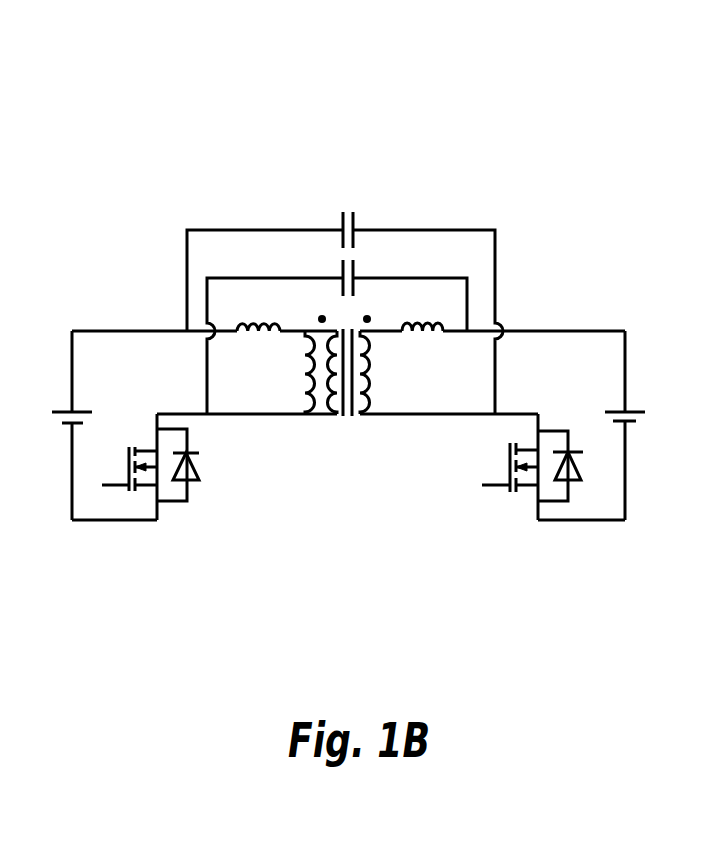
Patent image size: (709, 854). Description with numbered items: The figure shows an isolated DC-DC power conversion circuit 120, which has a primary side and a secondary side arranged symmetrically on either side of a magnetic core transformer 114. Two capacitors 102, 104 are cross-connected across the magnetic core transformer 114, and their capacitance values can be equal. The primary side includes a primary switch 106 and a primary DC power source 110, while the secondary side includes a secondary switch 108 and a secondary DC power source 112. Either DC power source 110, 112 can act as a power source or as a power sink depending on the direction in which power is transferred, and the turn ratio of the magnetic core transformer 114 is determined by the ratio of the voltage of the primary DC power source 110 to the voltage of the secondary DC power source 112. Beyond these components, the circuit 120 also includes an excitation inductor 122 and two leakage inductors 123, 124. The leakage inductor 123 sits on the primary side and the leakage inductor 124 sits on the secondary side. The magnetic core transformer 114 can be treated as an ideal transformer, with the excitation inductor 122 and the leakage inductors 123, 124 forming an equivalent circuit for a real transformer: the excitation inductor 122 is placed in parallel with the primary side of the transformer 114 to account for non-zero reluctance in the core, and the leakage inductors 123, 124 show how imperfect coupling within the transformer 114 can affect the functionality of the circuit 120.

The isolated DC-DC power conversion circuit 120 is at (155, 133).
The capacitor 102 is at (335, 205).
The capacitor 104 is at (363, 265).
The magnetic core transformer 114 is at (345, 427).
The excitation inductor 122 is at (297, 390).
The leakage inductor 123 is at (250, 340).
The leakage inductor 124 is at (425, 337).
The primary DC power source 110 is at (60, 435).
The secondary DC power source 112 is at (633, 432).
The primary switch 106 is at (132, 505).
The secondary switch 108 is at (522, 498).